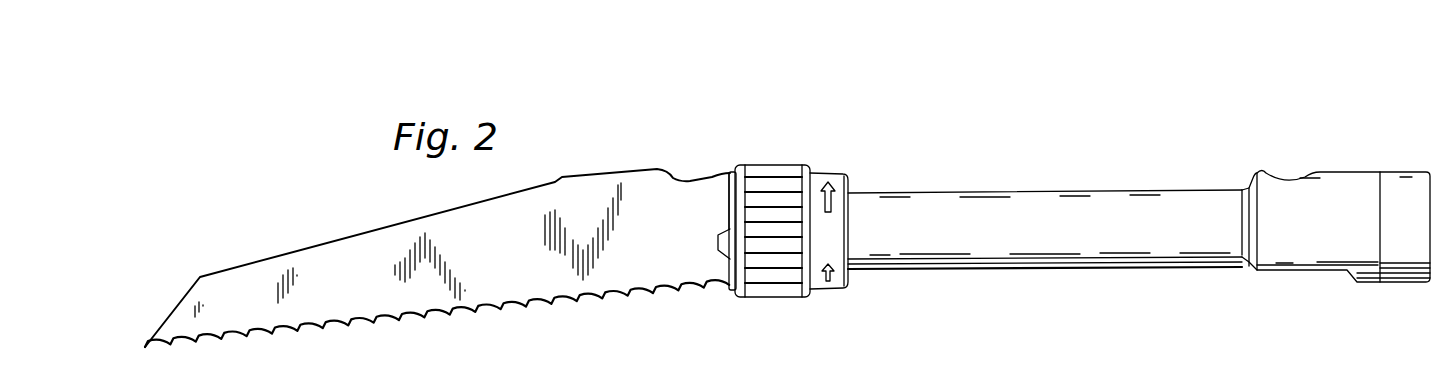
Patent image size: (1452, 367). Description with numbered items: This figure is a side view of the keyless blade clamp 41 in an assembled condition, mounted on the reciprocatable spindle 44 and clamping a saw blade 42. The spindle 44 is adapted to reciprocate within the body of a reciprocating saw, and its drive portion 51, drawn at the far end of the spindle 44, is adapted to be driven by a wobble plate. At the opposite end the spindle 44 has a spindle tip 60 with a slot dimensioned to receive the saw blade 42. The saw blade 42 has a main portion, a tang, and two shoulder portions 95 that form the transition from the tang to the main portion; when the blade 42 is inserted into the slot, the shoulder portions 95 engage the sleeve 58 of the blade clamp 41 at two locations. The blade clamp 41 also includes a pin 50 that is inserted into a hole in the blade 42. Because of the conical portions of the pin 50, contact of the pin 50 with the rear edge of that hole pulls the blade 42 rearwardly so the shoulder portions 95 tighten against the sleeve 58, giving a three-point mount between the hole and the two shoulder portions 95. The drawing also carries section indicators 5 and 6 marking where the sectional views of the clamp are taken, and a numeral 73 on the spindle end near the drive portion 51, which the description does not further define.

The saw blade 42 is at (352, 247).
The sleeve 58 is at (686, 259).
The spindle tip 60 is at (718, 223).
The shoulder portions 95 is at (722, 176).
The keyless blade clamp 41 is at (829, 307).
The spindle 44 is at (1100, 195).
The drive portion 51 is at (1337, 148).
The section line 5- 5 is at (668, 230).
The section line 6- 6 is at (777, 70).
The pin 50 is at (1165, 356).
The handle end 73 is at (1245, 358).